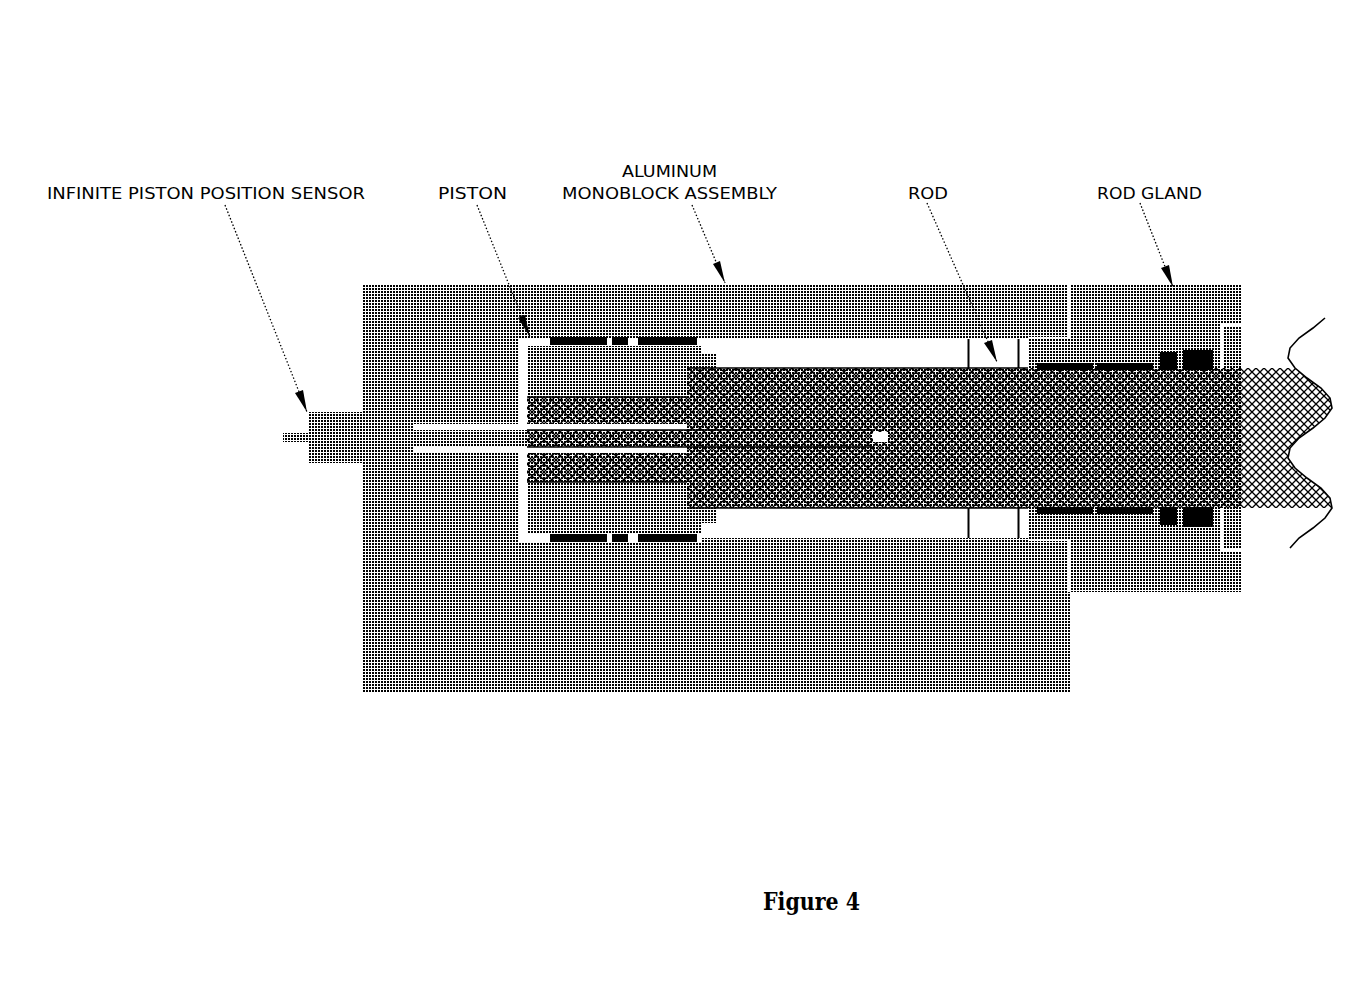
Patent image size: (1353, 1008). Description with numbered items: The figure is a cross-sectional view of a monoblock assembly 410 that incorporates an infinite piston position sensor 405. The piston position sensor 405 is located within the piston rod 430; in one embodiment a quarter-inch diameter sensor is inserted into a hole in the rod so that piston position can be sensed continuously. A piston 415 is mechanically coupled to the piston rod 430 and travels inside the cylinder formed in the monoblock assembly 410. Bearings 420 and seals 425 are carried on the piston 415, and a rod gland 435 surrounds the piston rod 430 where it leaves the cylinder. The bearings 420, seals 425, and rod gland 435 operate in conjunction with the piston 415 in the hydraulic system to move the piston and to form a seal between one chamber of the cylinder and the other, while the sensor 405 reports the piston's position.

The infinite piston position sensor 405 is at (310, 451).
The monoblock assembly 410 is at (362, 288).
The piston 415 is at (503, 348).
The bearings 420 is at (550, 338).
The seals 425 is at (613, 338).
The piston rod 430 is at (897, 383).
The rod gland 435 is at (1097, 286).